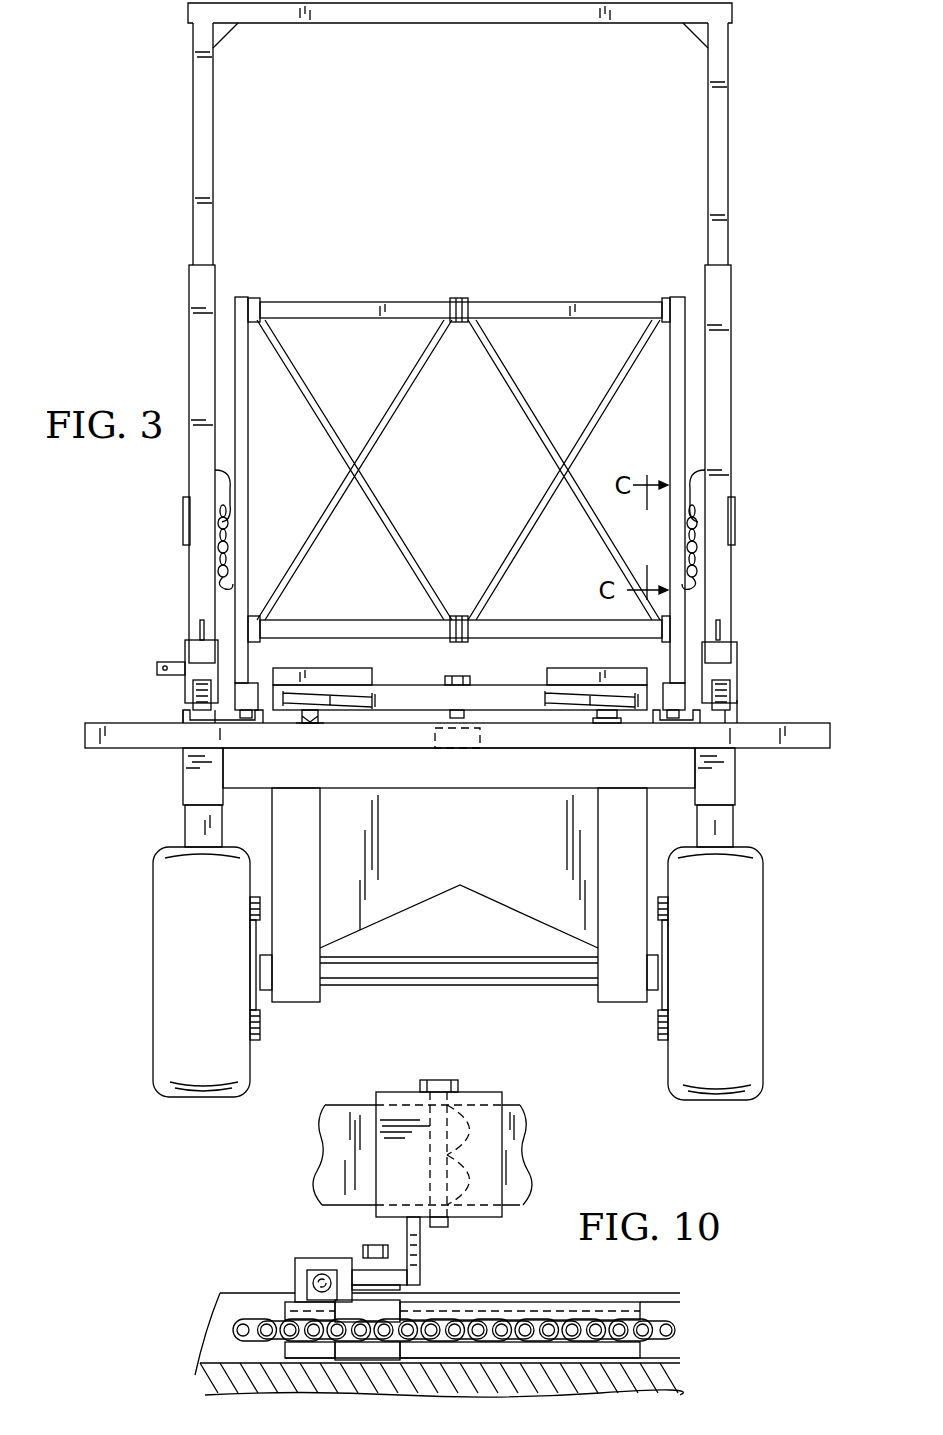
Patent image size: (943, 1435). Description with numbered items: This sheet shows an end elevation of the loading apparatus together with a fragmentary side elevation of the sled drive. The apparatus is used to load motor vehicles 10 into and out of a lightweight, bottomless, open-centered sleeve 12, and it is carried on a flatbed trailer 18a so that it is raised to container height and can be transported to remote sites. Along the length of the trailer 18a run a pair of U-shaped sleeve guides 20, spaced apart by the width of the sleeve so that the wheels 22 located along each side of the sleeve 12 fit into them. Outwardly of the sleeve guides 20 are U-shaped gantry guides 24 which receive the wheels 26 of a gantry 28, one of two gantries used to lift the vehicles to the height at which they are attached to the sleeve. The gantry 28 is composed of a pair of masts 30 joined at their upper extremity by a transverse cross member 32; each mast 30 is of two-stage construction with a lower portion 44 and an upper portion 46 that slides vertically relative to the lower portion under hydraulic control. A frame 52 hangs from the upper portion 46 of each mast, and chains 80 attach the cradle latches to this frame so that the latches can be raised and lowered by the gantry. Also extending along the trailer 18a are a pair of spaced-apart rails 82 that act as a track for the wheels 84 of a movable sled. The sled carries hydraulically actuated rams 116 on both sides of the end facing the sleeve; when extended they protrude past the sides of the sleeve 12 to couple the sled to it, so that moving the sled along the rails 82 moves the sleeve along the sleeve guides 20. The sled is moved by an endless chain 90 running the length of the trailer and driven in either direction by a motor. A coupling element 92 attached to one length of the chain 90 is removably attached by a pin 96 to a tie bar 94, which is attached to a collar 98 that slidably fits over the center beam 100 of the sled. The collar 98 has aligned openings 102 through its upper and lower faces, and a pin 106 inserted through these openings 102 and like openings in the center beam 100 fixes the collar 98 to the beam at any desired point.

In FIG. 3, the motor vehicle 10 is at (460, 456).
In FIG. 3, the sleeve 12 is at (620, 308).
In FIG. 3, the flatbed trailer 18a is at (485, 795).
In FIG. 3, the sleeve guide 20 is at (258, 712).
In FIG. 3, the wheel 22 is at (247, 720).
In FIG. 3, the gantry guide 24 is at (188, 718).
In FIG. 3, the wheel 26 is at (195, 688).
In FIG. 3, the gantry 28 is at (515, 134).
In FIG. 3, the mast 30 is at (461, 487).
In FIG. 3, the transverse cross member 32 is at (655, 22).
In FIG. 3, the lower portion 44 is at (198, 388).
In FIG. 3, the upper portion 46 is at (205, 170).
In FIG. 3, the frame 52 is at (215, 470).
In FIG. 3, the chain 80 is at (218, 580).
In FIG. 3, the rail 82 is at (312, 716).
In FIG. 3, the wheel 84 is at (320, 718).
In FIG. 3, the endless chain 90 is at (472, 750).
In FIG. 10, the endless chain 90 is at (262, 1300).
In FIG. 10, the coupling element 92 is at (318, 1258).
In FIG. 10, the tie bar 94 is at (420, 1275).
In FIG. 10, the pin 96 is at (375, 1245).
In FIG. 10, the collar 98 is at (463, 1138).
In FIG. 10, the center beam 100 is at (510, 1158).
In FIG. 10, the opening 102 is at (472, 1155).
In FIG. 10, the pin 106 is at (430, 1080).
In FIG. 3, the hydraulically actuated ram 116 is at (330, 690).